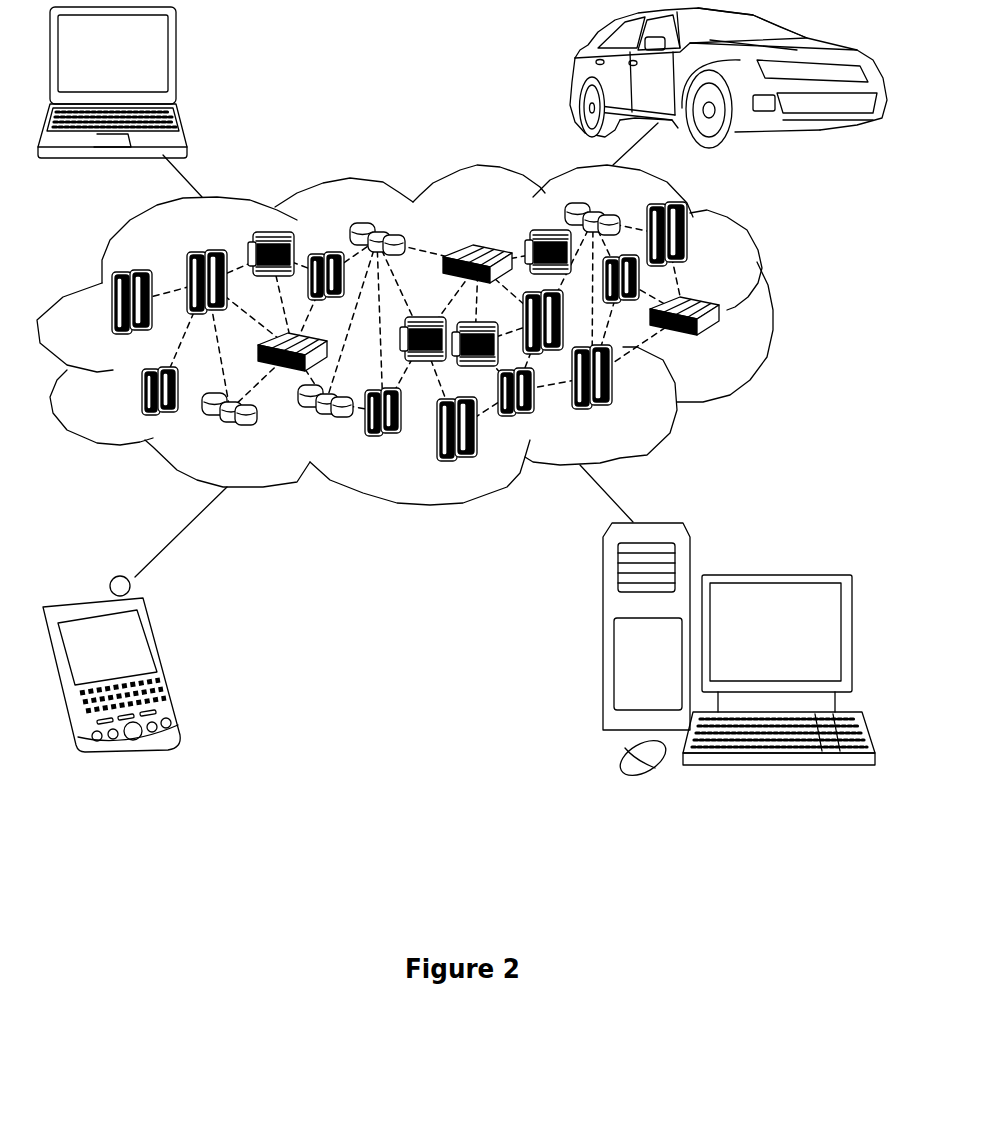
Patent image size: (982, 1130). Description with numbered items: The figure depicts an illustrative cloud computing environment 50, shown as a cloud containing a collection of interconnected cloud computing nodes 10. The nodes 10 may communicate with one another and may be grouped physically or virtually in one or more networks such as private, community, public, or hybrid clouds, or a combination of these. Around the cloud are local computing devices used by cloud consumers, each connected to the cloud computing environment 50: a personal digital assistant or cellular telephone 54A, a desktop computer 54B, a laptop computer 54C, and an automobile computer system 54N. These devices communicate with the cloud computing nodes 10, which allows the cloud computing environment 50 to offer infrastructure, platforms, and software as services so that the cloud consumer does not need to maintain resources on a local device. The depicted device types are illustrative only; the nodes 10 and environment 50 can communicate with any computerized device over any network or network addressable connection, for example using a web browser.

The cloud computing nodes 10 is at (461, 331).
The cloud computing environment 50 is at (775, 312).
The personal digital assistant or cellular telephone 54A is at (168, 657).
The desktop computer 54B is at (773, 575).
The laptop computer 54C is at (178, 63).
The automobile computer system 54N is at (572, 78).